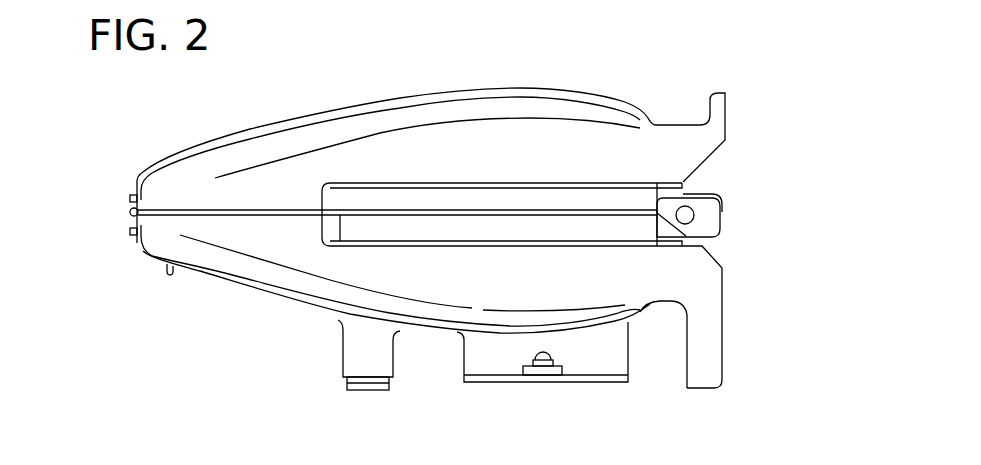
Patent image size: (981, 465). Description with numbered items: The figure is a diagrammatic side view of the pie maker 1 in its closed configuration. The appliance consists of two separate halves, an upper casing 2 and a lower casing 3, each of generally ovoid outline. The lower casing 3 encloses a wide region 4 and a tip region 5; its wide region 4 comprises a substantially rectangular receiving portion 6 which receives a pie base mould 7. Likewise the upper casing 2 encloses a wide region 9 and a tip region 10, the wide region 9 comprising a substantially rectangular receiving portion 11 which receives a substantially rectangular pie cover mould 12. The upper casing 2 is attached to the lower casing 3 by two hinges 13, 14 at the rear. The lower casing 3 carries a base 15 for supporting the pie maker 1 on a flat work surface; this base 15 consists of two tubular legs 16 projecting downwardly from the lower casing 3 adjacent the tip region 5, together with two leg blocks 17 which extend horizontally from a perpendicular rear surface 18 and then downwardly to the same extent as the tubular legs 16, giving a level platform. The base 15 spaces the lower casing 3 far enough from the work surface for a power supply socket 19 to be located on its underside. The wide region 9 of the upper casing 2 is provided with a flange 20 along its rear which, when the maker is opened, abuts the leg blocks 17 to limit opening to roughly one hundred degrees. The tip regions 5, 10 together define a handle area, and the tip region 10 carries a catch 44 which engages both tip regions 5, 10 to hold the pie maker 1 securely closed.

The pie maker 1 is at (180, 133).
The upper casing 2 is at (256, 117).
The lower casing 3 is at (243, 313).
The wide region 4 is at (451, 352).
The tip region 5 is at (133, 262).
The receiving portion 6 is at (388, 248).
The pie base mould 7 is at (347, 231).
The wide region 9 is at (424, 72).
The tip region 10 is at (128, 178).
The receiving portion 11 is at (398, 180).
The pie cover mould 12 is at (358, 198).
The hinge 13 is at (716, 196).
The hinge 14 is at (712, 225).
The base 15 is at (355, 392).
The tubular leg 16 is at (379, 369).
The leg block 17 is at (723, 361).
The rear surface 18 is at (648, 314).
The power supply socket 19 is at (546, 367).
The flange 20 is at (712, 127).
The catch 44 is at (128, 212).